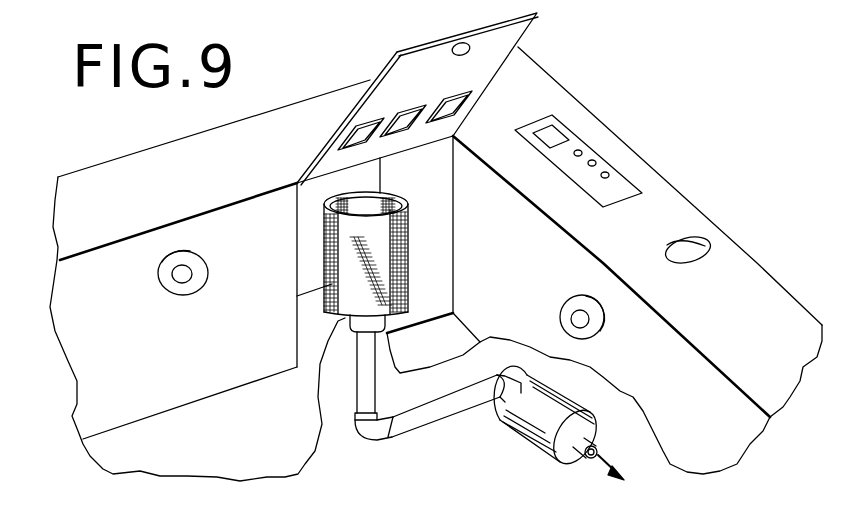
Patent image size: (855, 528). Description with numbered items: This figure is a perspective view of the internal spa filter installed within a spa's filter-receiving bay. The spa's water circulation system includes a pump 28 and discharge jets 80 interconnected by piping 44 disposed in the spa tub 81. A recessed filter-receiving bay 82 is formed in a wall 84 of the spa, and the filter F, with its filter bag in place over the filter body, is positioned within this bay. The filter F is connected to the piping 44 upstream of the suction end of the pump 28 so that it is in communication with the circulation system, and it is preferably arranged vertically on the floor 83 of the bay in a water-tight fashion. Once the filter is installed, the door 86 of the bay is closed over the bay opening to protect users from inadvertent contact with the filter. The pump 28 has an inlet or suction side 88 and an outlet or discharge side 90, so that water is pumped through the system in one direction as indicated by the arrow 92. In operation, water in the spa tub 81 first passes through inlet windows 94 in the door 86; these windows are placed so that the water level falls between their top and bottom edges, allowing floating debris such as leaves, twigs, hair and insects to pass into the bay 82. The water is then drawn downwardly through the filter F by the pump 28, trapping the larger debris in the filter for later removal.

The door 86 is at (512, 32).
The inlet windows 94 is at (357, 139).
The filter-receiving bay 82 is at (432, 157).
The filter F is at (408, 238).
The wall 84 is at (90, 357).
The spa tub 81 is at (172, 314).
The floor 83 is at (318, 344).
The piping 44 is at (366, 433).
The inlet side 88 is at (515, 378).
The discharge jets 80 is at (593, 331).
The pump 28 is at (528, 416).
The outlet side 90 is at (590, 428).
The arrow 92 is at (620, 451).